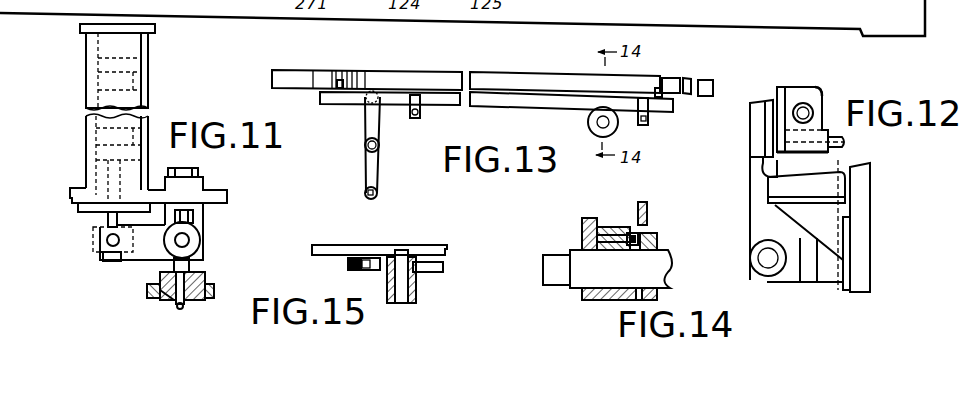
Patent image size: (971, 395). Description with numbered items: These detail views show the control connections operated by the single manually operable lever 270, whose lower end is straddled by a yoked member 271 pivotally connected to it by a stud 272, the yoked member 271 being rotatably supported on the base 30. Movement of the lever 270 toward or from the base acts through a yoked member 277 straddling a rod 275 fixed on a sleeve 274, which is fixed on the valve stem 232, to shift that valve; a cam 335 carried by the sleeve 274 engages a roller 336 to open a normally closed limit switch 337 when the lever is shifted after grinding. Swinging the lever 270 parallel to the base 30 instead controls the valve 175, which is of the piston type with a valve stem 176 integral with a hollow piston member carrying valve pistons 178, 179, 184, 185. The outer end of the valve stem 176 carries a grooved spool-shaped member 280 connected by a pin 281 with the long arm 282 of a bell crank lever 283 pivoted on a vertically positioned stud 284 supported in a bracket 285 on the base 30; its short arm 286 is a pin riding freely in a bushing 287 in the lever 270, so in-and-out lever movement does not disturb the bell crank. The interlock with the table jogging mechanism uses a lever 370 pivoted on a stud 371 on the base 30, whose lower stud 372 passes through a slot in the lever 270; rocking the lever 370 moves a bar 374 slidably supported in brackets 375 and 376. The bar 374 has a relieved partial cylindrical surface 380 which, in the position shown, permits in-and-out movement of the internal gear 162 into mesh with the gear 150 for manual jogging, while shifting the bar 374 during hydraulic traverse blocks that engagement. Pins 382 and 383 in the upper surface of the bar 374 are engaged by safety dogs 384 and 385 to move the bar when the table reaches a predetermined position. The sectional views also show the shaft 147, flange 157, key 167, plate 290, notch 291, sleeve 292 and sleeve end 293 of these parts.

In FIG. 11, the valve 175 is at (78, 29).
In FIG. 11, the valve piston 185 is at (103, 67).
In FIG. 11, the valve piston 184 is at (100, 98).
In FIG. 11, the valve piston 179 is at (103, 123).
In FIG. 11, the valve piston 178 is at (100, 152).
In FIG. 11, the valve stem 176 is at (108, 224).
In FIG. 11, the grooved spool-shaped member 280 is at (95, 243).
In FIG. 11, the pin 281 is at (108, 258).
In FIG. 11, the long arm 282 is at (146, 256).
In FIG. 11, the bracket 285 is at (210, 210).
In FIG. 11, the bell crank lever 283 is at (203, 233).
In FIG. 11, the stud 284 is at (185, 240).
In FIG. 11, the manually operable lever 270 is at (205, 292).
In FIG. 12, the manually operable lever 270 is at (752, 205).
In FIG. 11, the short arm 286 is at (182, 300).
In FIG. 11, the bushing 287 is at (165, 296).
In FIG. 13, the partial cylindrical surface 380 is at (600, 108).
In FIG. 13, the pin 382 is at (345, 72).
In FIG. 13, the safety dog 384 is at (335, 72).
In FIG. 15, the safety dog 384 is at (346, 261).
In FIG. 13, the bar 374 is at (507, 106).
In FIG. 15, the bar 374 is at (445, 268).
In FIG. 14, the bar 374 is at (650, 191).
In FIG. 13, the lever 370 is at (365, 110).
In FIG. 13, the stud 371 is at (380, 145).
In FIG. 13, the pin or stud 372 is at (365, 193).
In FIG. 13, the bracket 375 is at (422, 112).
In FIG. 13, the bracket 376 is at (650, 112).
In FIG. 13, the internal gear 162 is at (619, 127).
In FIG. 14, the internal gear 162 is at (604, 232).
In FIG. 13, the pin 383 is at (658, 87).
In FIG. 13, the safety dog 385 is at (690, 82).
In FIG. 15, the plate 290 is at (450, 231).
In FIG. 15, the notch 291 is at (398, 254).
In FIG. 15, the sleeve 292 is at (418, 277).
In FIG. 15, the sleeve end 293 is at (401, 303).
In FIG. 14, the shaft 147 is at (655, 262).
In FIG. 14, the bearing flange 157 is at (582, 232).
In FIG. 14, the key 167 is at (632, 236).
In FIG. 14, the gear 150 is at (650, 238).
In FIG. 12, the rod 275 is at (803, 103).
In FIG. 12, the yoked member 277 is at (819, 90).
In FIG. 12, the valve stem 232 is at (848, 141).
In FIG. 12, the sleeve 274 is at (830, 153).
In FIG. 12, the cam 335 is at (760, 140).
In FIG. 12, the roller 336 is at (763, 168).
In FIG. 12, the limit switch 337 is at (806, 187).
In FIG. 12, the stud 272 is at (755, 262).
In FIG. 12, the yoked member 271 is at (792, 282).
In FIG. 12, the base 30 is at (865, 220).